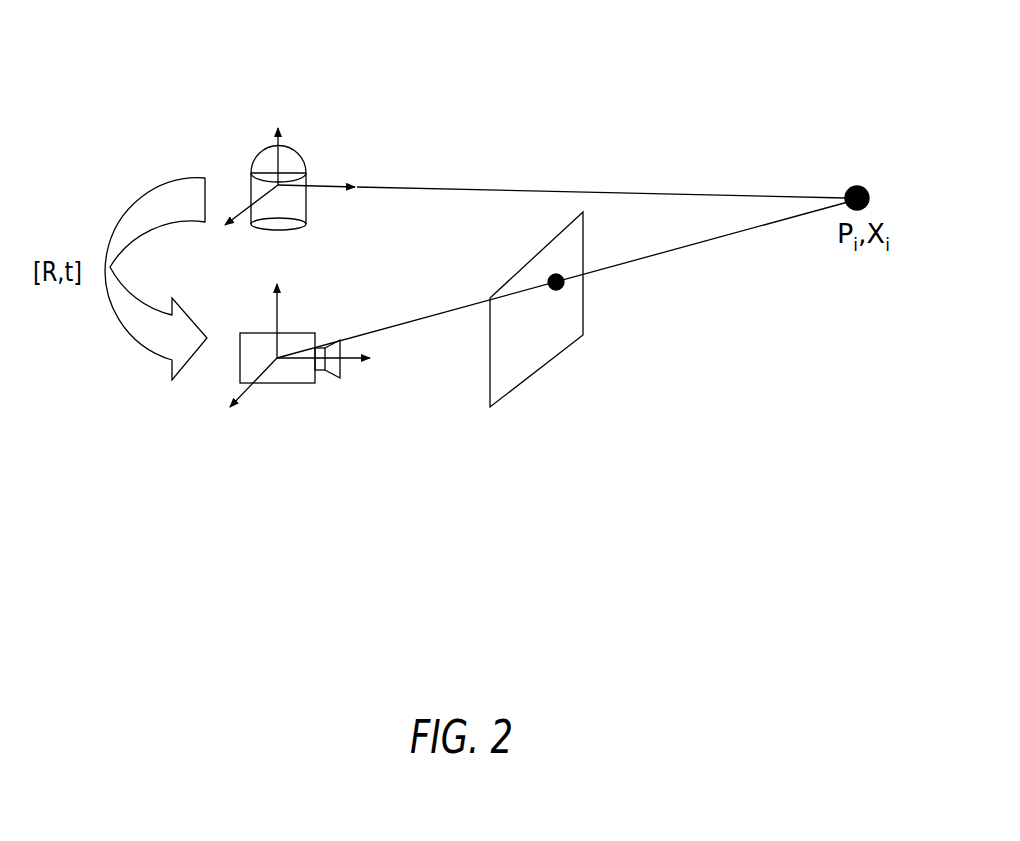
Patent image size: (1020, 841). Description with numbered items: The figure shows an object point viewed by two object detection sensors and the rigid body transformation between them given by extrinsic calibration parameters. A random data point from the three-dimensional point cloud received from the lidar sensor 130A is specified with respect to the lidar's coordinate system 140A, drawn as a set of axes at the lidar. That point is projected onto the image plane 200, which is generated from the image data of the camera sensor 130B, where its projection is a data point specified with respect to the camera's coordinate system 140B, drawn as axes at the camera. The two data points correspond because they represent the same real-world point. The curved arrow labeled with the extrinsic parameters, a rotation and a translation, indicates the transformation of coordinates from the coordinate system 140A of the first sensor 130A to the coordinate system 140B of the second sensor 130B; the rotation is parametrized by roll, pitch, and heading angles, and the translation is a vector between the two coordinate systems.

The lidar sensor 130A is at (253, 160).
The coordinate system 140A is at (315, 132).
The camera sensor 130B is at (277, 383).
The coordinate system 140B is at (300, 410).
The image plane 200 is at (523, 362).